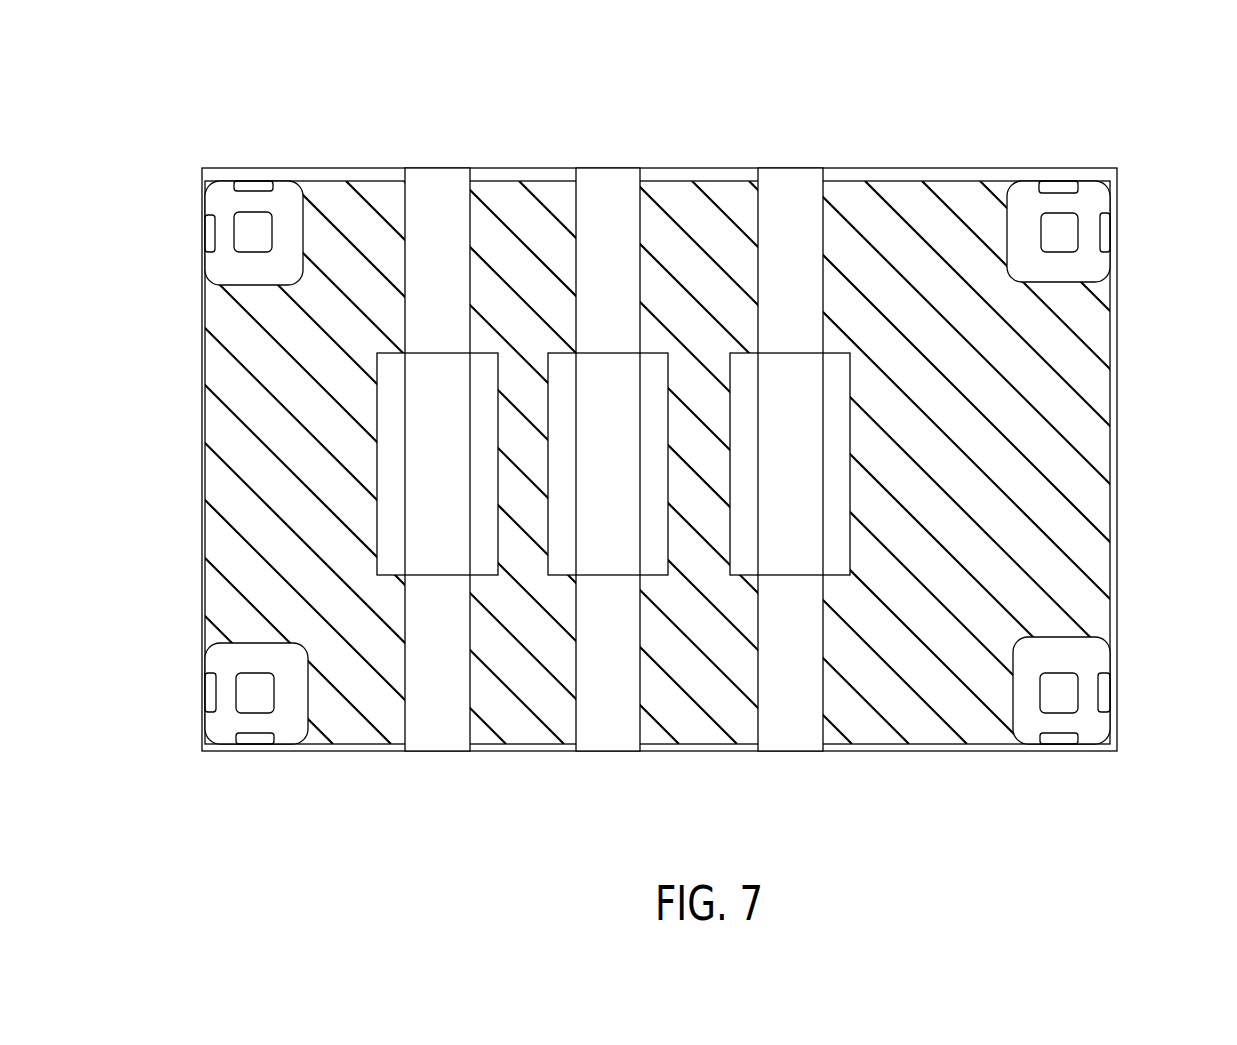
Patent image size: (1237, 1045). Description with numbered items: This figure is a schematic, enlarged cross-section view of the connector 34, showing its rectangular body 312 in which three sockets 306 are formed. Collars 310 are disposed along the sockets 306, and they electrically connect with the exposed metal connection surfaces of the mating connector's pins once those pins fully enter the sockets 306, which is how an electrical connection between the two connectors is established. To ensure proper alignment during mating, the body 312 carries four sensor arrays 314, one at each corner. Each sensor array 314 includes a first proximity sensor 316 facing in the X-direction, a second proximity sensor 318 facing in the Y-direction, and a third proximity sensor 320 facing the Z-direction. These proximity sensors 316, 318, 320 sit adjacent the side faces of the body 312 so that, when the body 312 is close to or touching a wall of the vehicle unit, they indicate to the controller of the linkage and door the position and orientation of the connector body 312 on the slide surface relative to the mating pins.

The connector 34 is at (1100, 404).
The socket 306 is at (797, 153).
The collar 310 is at (417, 470).
The body 312 is at (1100, 545).
The sensor array 314 is at (235, 143).
The first proximity sensor 316 is at (1109, 232).
The second proximity sensor 318 is at (1056, 180).
The third proximity sensor 320 is at (1064, 253).